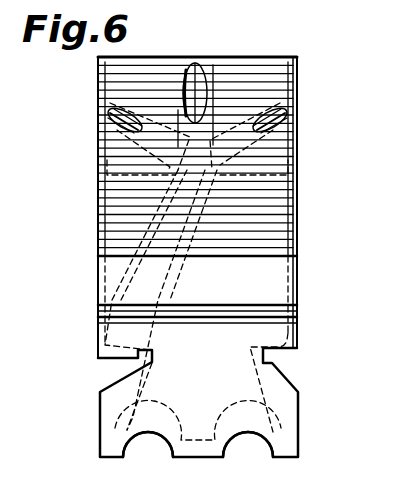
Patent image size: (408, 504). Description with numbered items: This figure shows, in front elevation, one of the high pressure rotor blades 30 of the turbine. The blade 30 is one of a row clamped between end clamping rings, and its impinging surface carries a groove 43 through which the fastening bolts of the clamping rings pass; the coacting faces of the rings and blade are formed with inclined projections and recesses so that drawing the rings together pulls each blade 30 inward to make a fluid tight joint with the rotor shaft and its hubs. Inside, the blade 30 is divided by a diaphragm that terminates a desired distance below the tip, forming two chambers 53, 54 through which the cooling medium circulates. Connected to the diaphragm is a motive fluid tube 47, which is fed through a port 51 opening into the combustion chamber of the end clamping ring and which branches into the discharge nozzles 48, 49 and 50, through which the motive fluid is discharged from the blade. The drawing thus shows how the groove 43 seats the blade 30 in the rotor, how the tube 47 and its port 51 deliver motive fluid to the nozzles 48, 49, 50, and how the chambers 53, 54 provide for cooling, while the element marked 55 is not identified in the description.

The high pressure rotor blade 30 is at (297, 177).
The groove 43 is at (243, 290).
The motive fluid tube 47 is at (98, 245).
The discharge nozzle 48 is at (203, 60).
The discharge nozzle 49 is at (99, 139).
The discharge nozzle 50 is at (290, 118).
The port 51 is at (98, 328).
The chamber 53 is at (98, 200).
The chamber 54 is at (257, 440).
The bottom notch 55 is at (160, 443).